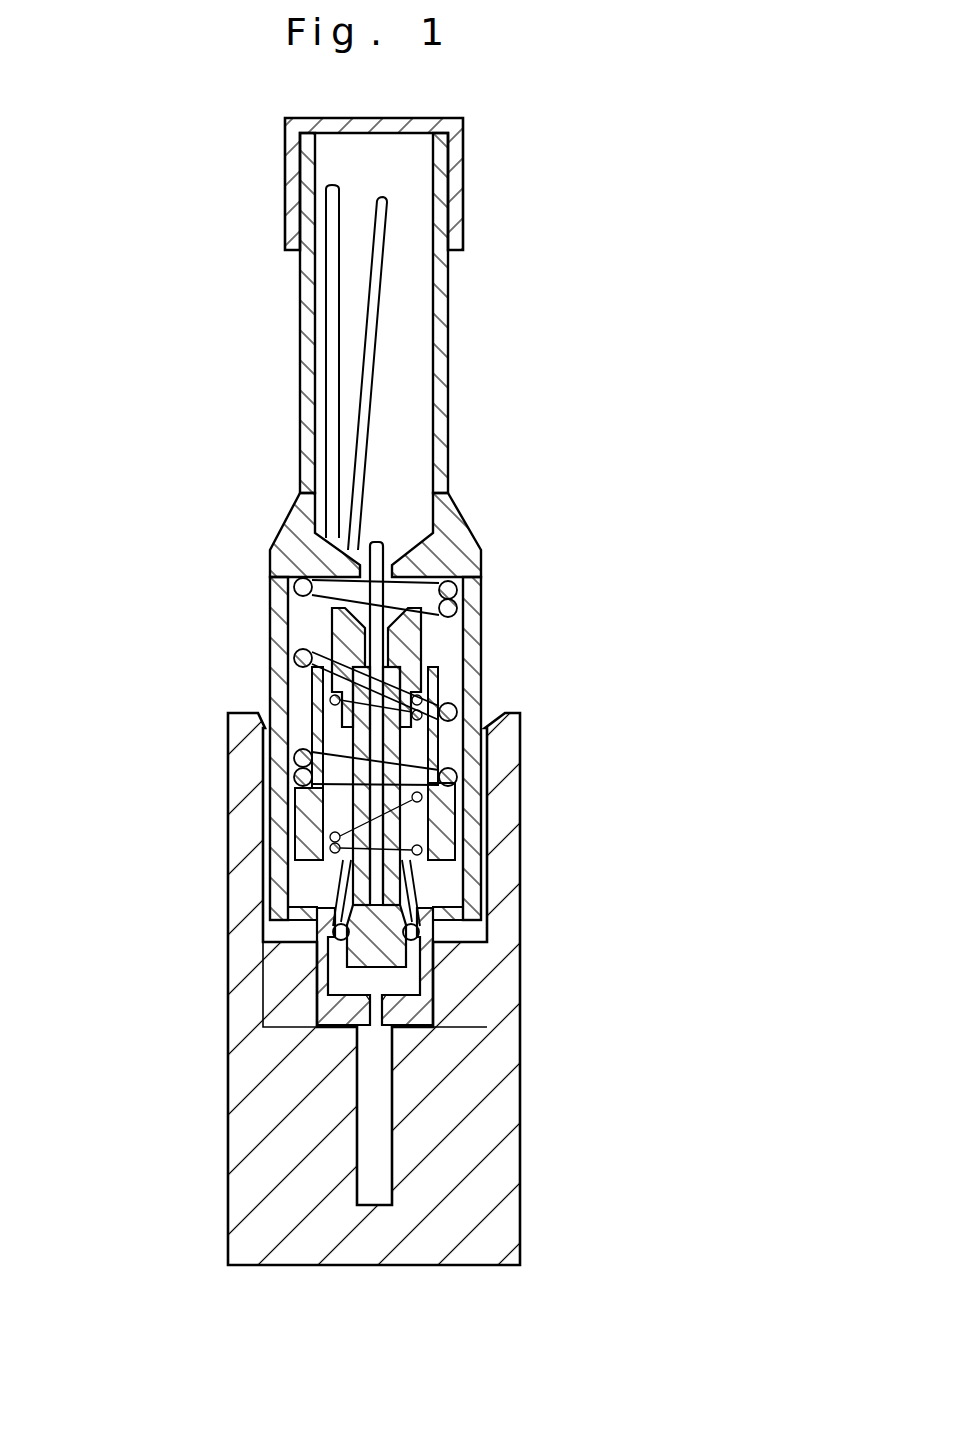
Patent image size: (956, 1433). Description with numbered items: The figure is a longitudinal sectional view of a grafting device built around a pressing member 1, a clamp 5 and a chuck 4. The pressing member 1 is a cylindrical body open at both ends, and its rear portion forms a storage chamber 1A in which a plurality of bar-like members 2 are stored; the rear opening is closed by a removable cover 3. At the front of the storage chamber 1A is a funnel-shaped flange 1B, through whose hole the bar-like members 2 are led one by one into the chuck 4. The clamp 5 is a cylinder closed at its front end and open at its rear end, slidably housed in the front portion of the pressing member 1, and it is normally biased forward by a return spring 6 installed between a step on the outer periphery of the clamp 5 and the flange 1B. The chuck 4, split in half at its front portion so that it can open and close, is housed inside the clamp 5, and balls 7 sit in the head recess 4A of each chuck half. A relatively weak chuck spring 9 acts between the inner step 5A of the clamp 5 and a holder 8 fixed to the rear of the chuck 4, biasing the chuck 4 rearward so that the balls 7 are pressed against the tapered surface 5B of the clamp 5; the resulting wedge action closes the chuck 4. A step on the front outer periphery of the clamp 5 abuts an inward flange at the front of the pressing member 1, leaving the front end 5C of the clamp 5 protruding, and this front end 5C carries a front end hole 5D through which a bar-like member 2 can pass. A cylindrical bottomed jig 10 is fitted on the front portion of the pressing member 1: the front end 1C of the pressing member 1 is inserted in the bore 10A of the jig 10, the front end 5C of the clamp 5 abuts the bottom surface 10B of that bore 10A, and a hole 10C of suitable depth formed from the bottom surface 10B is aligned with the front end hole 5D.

The pressing member 1 is at (448, 332).
The storage chamber 1A is at (407, 417).
The funnel-shaped flange 1B is at (410, 556).
The front end of the pressing member 1C is at (280, 813).
The bar-like members 2 is at (368, 336).
The removable cover 3 is at (465, 148).
The chuck 4 is at (395, 850).
The head recess 4A is at (412, 946).
The clamp 5 is at (440, 878).
The inner step of the clamp 5A is at (338, 868).
The tapered surface of the clamp 5B is at (333, 900).
The front end of the clamp 5C is at (418, 1028).
The front end hole 5D is at (370, 1012).
The return spring 6 is at (455, 696).
The balls 7 is at (330, 938).
The holder 8 is at (410, 636).
The chuck spring 9 is at (412, 800).
The jig 10 is at (500, 1182).
The bore of the jig 10A is at (470, 1000).
The bottom surface of the bore 10B is at (290, 1027).
The hole in the jig 10C is at (368, 1145).